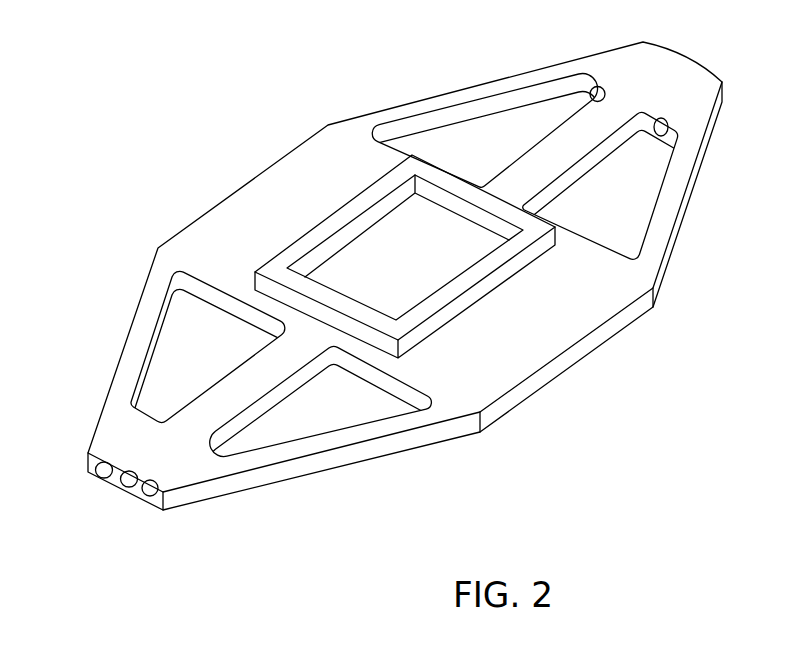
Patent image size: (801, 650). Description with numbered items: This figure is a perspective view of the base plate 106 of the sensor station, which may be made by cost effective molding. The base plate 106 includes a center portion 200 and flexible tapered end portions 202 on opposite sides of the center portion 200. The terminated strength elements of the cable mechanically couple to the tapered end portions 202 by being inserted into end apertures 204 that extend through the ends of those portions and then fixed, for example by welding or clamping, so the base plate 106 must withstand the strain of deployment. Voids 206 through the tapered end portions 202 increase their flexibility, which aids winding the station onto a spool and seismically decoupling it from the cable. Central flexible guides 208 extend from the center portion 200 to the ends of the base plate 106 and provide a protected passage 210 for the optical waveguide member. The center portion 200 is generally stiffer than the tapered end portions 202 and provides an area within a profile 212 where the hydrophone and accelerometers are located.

The base plate 106 is at (295, 95).
The center portion 200 is at (425, 277).
The flexible tapered end portions 202 is at (704, 238).
The end apertures 204 is at (563, 93).
The voids 206 is at (497, 140).
The central flexible guides 208 is at (532, 177).
The protected passage 210 is at (124, 482).
The profile 212 is at (313, 238).